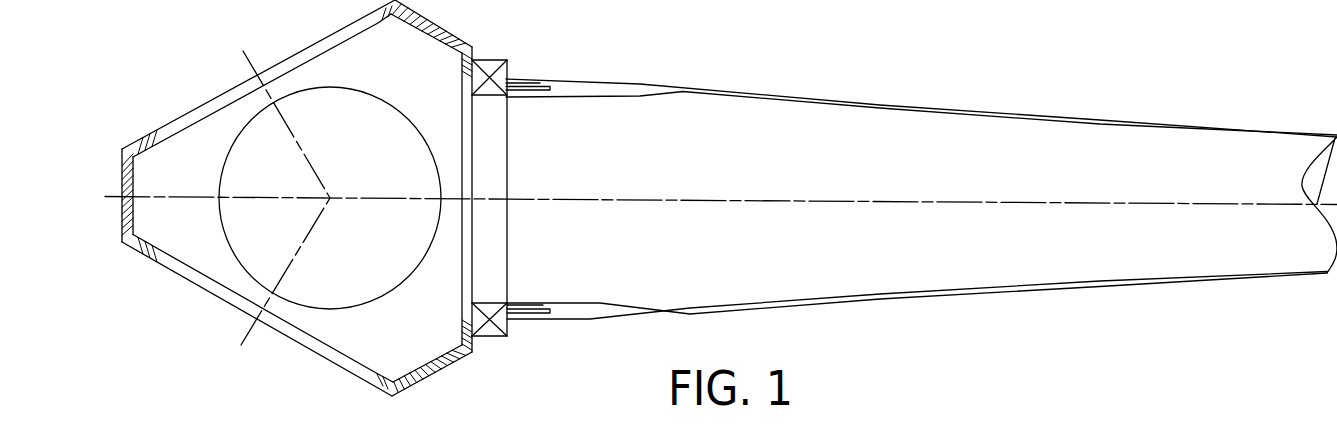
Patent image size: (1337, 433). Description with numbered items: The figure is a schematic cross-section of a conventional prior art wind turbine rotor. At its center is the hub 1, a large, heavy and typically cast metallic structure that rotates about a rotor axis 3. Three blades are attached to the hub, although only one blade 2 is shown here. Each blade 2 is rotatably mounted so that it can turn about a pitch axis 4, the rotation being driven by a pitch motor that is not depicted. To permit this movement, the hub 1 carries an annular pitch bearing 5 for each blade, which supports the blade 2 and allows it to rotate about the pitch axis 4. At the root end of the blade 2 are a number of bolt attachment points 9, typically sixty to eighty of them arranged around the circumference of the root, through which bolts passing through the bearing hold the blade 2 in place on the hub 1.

The hub 1 is at (122, 177).
The blade 2 is at (1035, 118).
The rotor axis 3 is at (330, 197).
The pitch axis 4 is at (873, 203).
The annular pitch bearing 5 is at (508, 337).
The bolt attachment points 9 is at (532, 87).